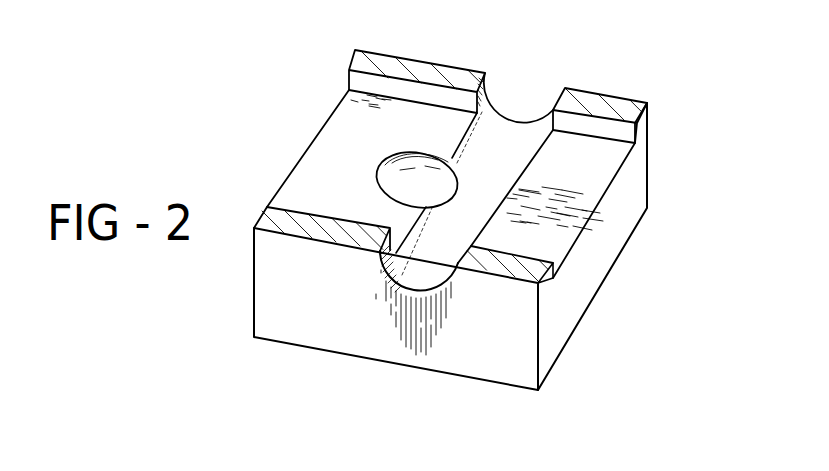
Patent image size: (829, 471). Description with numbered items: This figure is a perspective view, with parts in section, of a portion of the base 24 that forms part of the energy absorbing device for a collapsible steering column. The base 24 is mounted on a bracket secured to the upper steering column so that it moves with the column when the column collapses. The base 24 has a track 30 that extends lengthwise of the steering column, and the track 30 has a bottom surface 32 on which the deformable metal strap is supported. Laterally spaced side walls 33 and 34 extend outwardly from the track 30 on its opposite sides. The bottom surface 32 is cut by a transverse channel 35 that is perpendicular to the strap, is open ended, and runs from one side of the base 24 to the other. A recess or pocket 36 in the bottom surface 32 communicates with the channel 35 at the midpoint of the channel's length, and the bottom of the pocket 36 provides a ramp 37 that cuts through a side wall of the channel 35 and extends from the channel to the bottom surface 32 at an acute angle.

The base 24 is at (575, 340).
The track 30 is at (339, 155).
The bottom surface 32 is at (555, 239).
The side wall 33 is at (649, 125).
The side wall 34 is at (263, 257).
The transverse channel 35 is at (518, 128).
The recess or pocket 36 is at (416, 178).
The ramp 37 is at (378, 175).